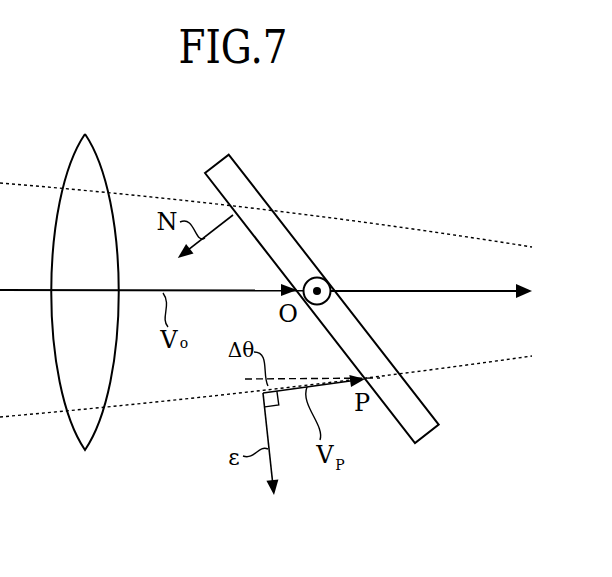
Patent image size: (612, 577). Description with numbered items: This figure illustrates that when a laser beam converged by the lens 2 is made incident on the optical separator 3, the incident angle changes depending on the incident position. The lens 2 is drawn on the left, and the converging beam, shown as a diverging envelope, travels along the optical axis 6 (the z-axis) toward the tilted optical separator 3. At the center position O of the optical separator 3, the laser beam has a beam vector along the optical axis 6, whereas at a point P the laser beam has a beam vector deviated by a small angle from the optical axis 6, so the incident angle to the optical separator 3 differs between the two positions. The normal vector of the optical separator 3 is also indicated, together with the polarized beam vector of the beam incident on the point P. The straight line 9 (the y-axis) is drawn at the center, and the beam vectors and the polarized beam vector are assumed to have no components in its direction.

The lens 2 is at (85, 452).
The optical separator 3 is at (425, 437).
The optical axis 6 is at (487, 292).
The straight line 9 is at (321, 287).